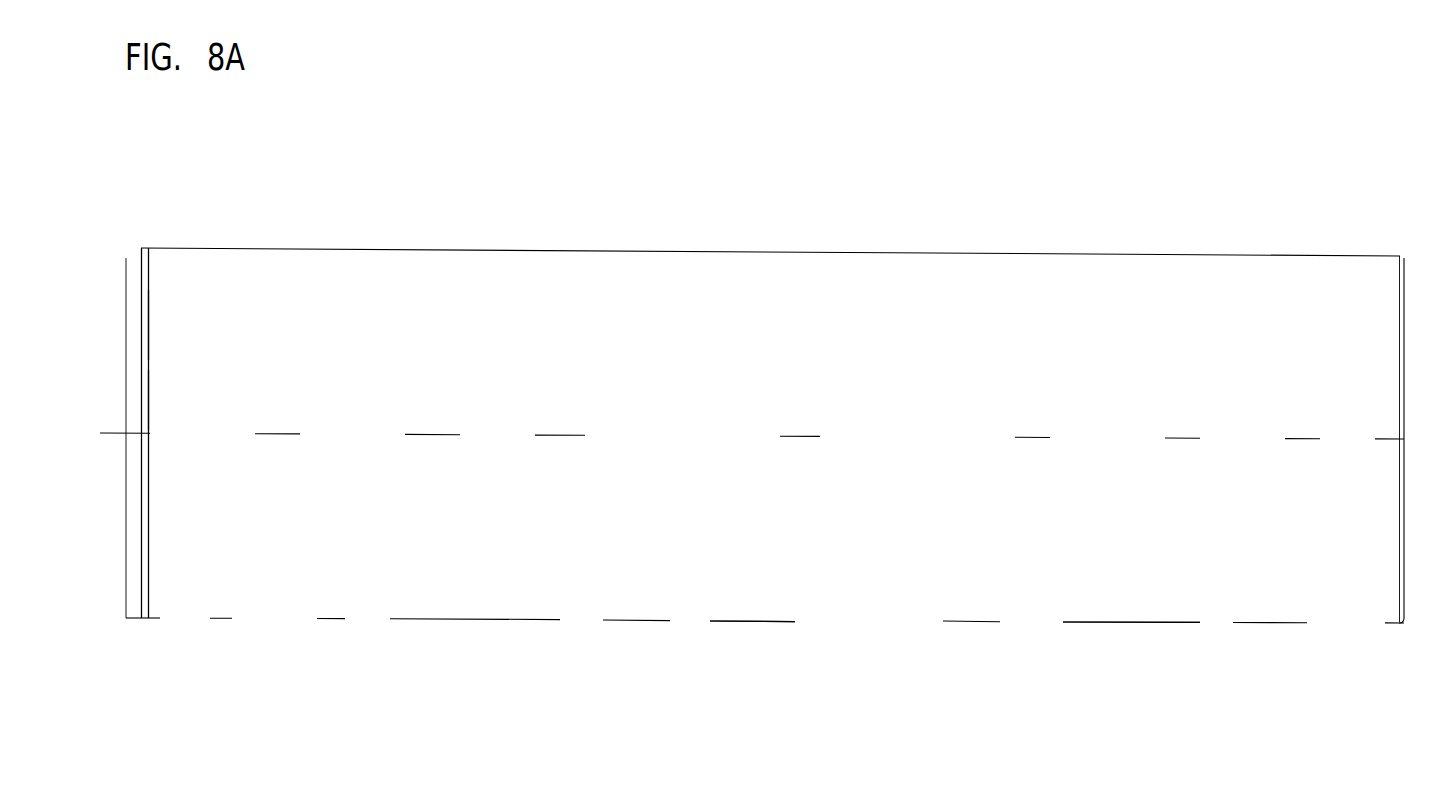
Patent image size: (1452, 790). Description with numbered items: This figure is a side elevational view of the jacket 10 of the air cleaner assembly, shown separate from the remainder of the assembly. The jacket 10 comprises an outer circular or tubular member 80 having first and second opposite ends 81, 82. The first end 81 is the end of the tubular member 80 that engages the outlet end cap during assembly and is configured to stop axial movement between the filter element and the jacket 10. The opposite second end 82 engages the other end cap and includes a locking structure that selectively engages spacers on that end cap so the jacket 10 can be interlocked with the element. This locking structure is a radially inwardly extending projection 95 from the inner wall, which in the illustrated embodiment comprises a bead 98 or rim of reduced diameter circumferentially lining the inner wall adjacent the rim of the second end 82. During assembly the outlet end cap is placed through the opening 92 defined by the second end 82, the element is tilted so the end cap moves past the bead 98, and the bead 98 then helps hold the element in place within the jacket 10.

The jacket 10 is at (592, 626).
The outer tubular member 80 is at (1045, 622).
The first end 81 is at (1402, 256).
The second end 82 is at (143, 247).
The opening 92 is at (133, 260).
The projection 95 is at (148, 341).
The bead 98 is at (148, 400).